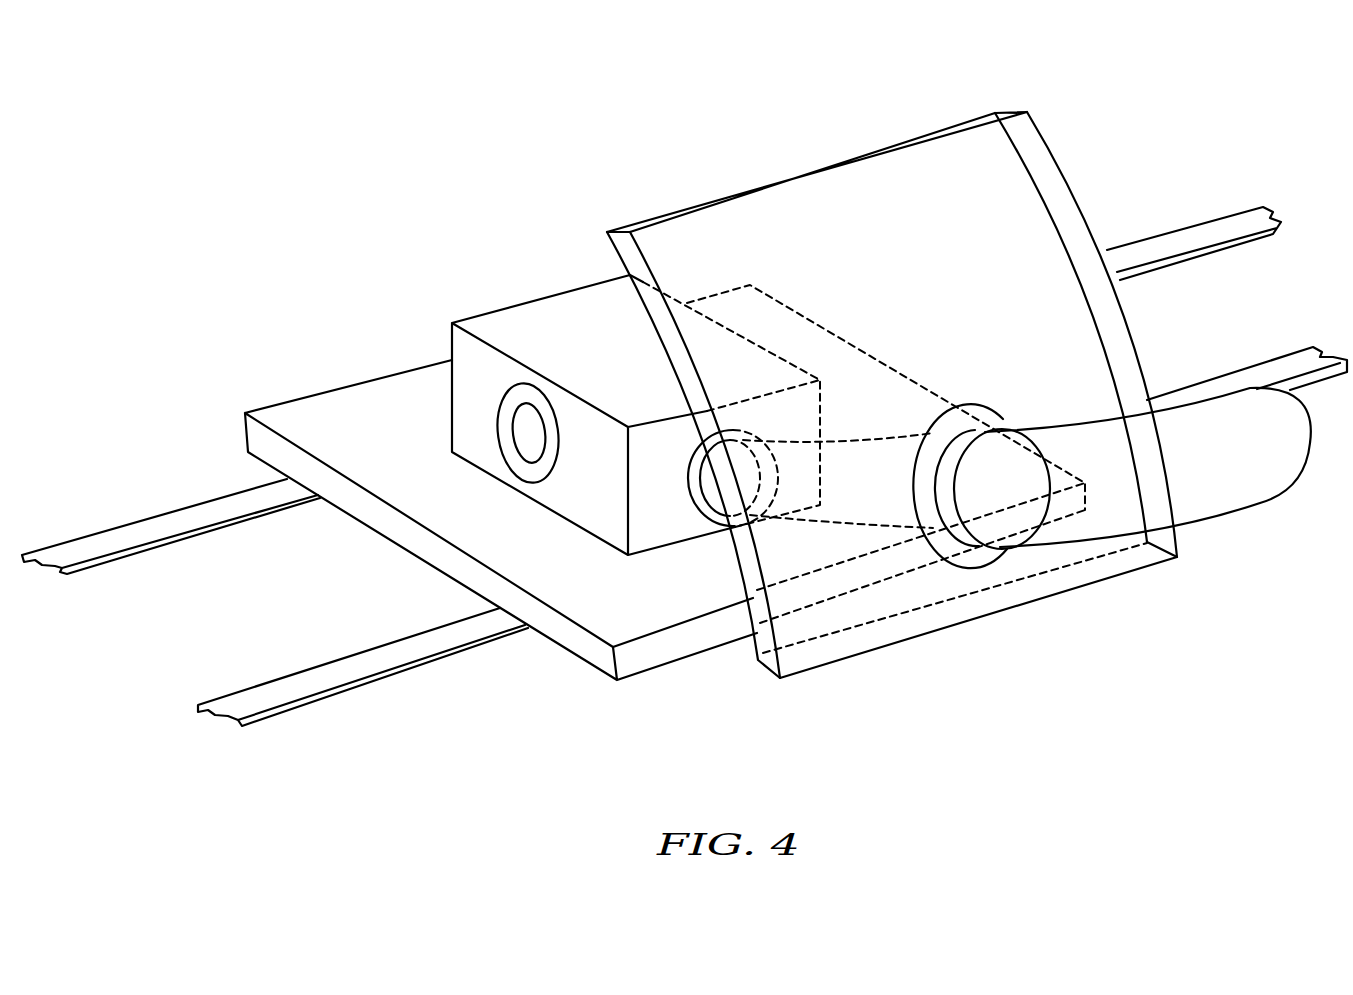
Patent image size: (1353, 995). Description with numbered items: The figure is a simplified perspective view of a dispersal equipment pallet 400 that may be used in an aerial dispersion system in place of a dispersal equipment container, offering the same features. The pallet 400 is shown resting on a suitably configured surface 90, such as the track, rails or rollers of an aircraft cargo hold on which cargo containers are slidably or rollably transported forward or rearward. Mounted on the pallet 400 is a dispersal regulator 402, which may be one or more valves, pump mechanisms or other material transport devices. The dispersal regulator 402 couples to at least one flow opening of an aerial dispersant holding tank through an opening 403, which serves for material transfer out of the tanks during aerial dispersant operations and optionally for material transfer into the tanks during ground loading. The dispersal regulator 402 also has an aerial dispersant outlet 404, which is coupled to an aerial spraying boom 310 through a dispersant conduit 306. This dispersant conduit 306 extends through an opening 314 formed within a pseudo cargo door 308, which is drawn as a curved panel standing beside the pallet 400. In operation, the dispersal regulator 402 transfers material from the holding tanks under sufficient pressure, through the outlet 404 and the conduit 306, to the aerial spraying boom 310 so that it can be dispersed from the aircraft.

The surface 90 is at (148, 552).
The dispersant conduit 306 is at (892, 377).
The pseudo cargo door 308 is at (1008, 198).
The aerial spraying boom 310 is at (1202, 425).
The opening 314 is at (977, 558).
The dispersal equipment pallet 400 is at (332, 408).
The dispersal regulator 402 is at (567, 313).
The opening 403 is at (710, 517).
The aerial dispersant outlet 404 is at (523, 435).